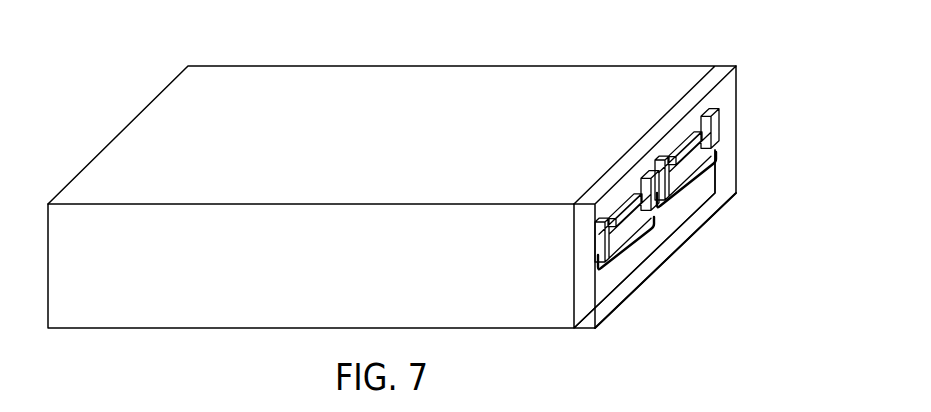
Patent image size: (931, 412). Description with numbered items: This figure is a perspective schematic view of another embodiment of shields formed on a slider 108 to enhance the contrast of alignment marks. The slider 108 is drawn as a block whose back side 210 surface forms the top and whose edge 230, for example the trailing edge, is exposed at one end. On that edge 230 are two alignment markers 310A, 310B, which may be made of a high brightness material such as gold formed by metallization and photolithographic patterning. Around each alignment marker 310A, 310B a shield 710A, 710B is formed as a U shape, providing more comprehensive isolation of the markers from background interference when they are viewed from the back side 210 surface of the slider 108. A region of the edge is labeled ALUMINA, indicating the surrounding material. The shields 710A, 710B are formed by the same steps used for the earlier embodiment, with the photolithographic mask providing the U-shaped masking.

The slider 108 is at (150, 319).
The back side surface 210 is at (137, 132).
The edge 230 is at (583, 300).
The alignment marker 310A is at (623, 206).
The alignment marker 310B is at (693, 133).
The shield 710A is at (633, 243).
The shield 710B is at (693, 180).
The alumina substrate ALUMINA is at (725, 128).